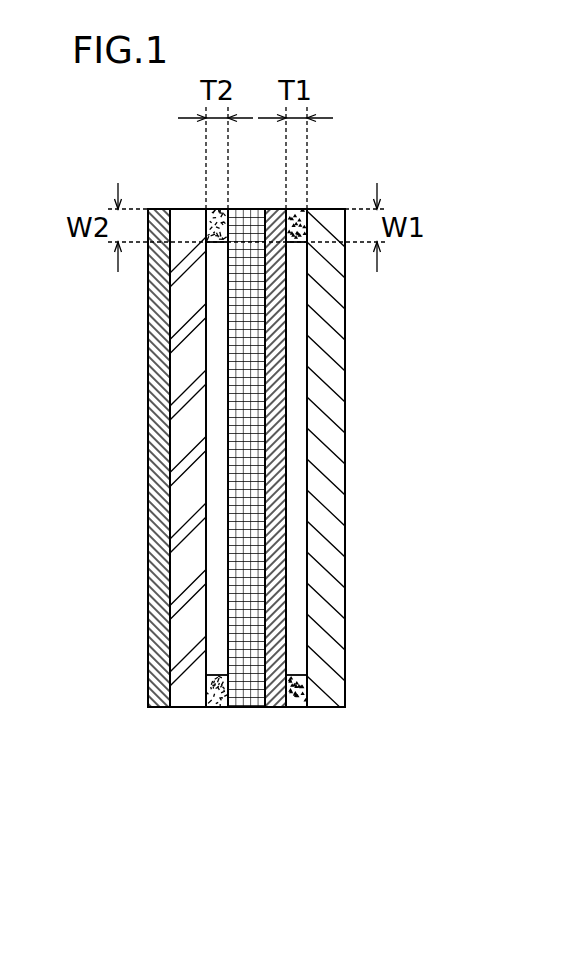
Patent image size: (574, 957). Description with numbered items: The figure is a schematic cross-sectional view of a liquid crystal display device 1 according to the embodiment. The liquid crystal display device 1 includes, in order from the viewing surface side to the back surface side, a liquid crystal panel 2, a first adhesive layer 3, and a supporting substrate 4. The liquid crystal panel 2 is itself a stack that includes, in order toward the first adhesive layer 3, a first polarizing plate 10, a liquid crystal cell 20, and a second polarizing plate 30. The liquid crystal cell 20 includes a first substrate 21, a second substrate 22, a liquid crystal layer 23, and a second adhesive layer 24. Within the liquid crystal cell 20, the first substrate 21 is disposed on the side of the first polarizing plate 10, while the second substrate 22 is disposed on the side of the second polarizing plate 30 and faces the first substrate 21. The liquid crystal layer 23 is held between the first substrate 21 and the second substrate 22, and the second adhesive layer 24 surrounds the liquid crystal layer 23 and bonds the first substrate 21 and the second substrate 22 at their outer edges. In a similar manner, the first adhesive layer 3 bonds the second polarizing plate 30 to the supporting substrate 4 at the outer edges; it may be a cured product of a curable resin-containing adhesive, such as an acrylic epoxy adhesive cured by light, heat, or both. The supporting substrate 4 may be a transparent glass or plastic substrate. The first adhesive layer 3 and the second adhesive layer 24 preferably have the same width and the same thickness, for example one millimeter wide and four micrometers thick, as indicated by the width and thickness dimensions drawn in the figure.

The liquid crystal display device 1 is at (379, 161).
The liquid crystal panel 2 is at (125, 765).
The first adhesive layer 3 is at (295, 228).
The supporting substrate 4 is at (323, 458).
The first polarizing plate 10 is at (157, 702).
The liquid crystal cell 20 is at (265, 716).
The first substrate 21 is at (188, 227).
The second substrate 22 is at (260, 208).
The liquid crystal layer 23 is at (217, 285).
The second adhesive layer 24 is at (215, 220).
The second polarizing plate 30 is at (273, 695).